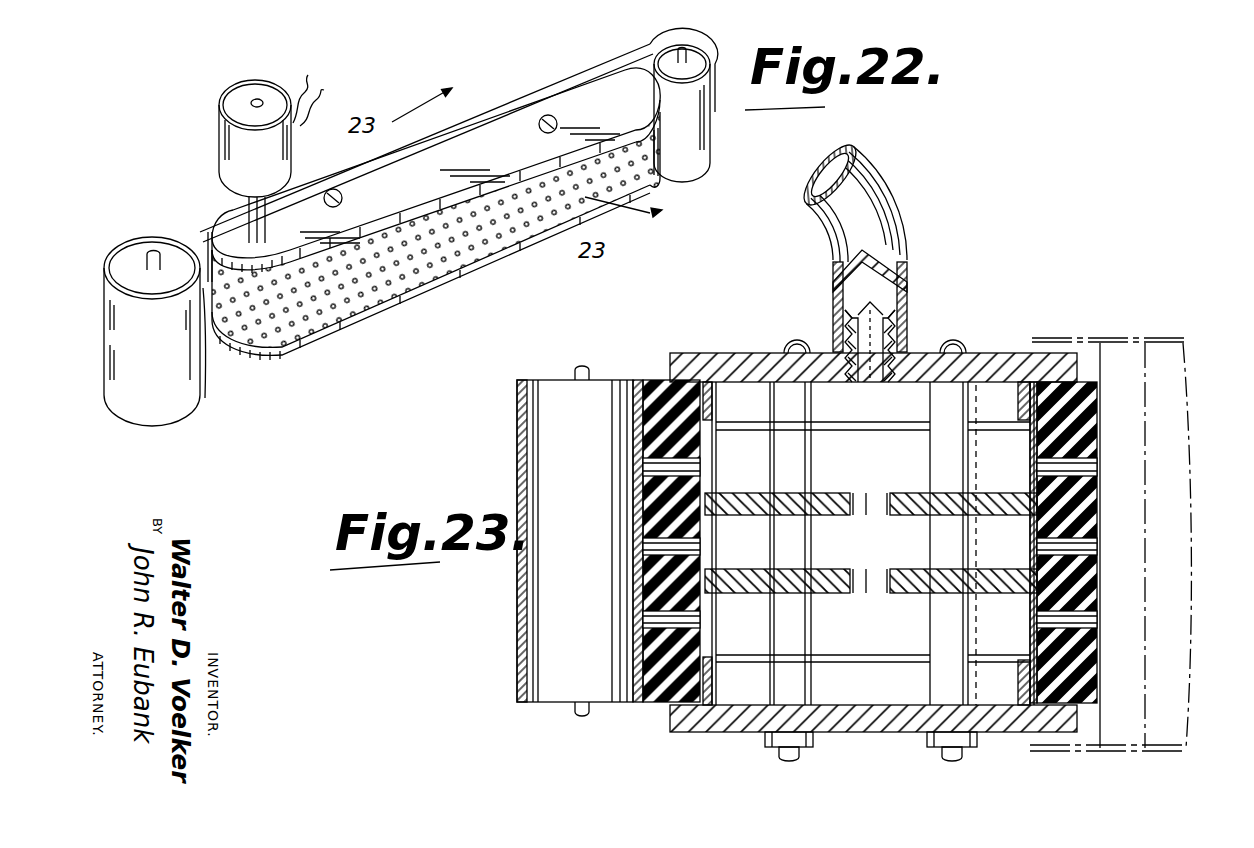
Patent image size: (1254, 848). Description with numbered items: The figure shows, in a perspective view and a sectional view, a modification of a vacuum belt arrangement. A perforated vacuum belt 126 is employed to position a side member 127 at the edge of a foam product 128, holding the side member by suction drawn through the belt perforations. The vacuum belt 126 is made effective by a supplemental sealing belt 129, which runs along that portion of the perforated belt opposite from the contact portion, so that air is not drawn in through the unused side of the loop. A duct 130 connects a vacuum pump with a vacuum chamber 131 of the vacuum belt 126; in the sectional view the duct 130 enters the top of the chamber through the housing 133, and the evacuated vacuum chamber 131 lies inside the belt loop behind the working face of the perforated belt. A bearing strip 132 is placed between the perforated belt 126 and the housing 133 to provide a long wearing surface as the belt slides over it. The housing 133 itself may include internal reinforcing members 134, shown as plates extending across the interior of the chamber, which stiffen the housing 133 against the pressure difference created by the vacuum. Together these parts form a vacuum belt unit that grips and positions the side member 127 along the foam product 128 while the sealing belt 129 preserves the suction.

In FIG. 22, the vacuum belt 126 is at (372, 298).
In FIG. 23, the vacuum belt 126 is at (1092, 420).
In FIG. 23, the side member 127 is at (1120, 468).
In FIG. 23, the foam product 128 is at (1225, 303).
In FIG. 22, the supplemental sealing belt 129 is at (568, 78).
In FIG. 23, the supplemental sealing belt 129 is at (516, 405).
In FIG. 23, the duct 130 is at (865, 179).
In FIG. 23, the vacuum chamber 131 is at (910, 395).
In FIG. 23, the bearing strip 132 is at (1022, 393).
In FIG. 23, the housing 133 is at (740, 366).
In FIG. 23, the internal reinforcing members 134 is at (832, 494).